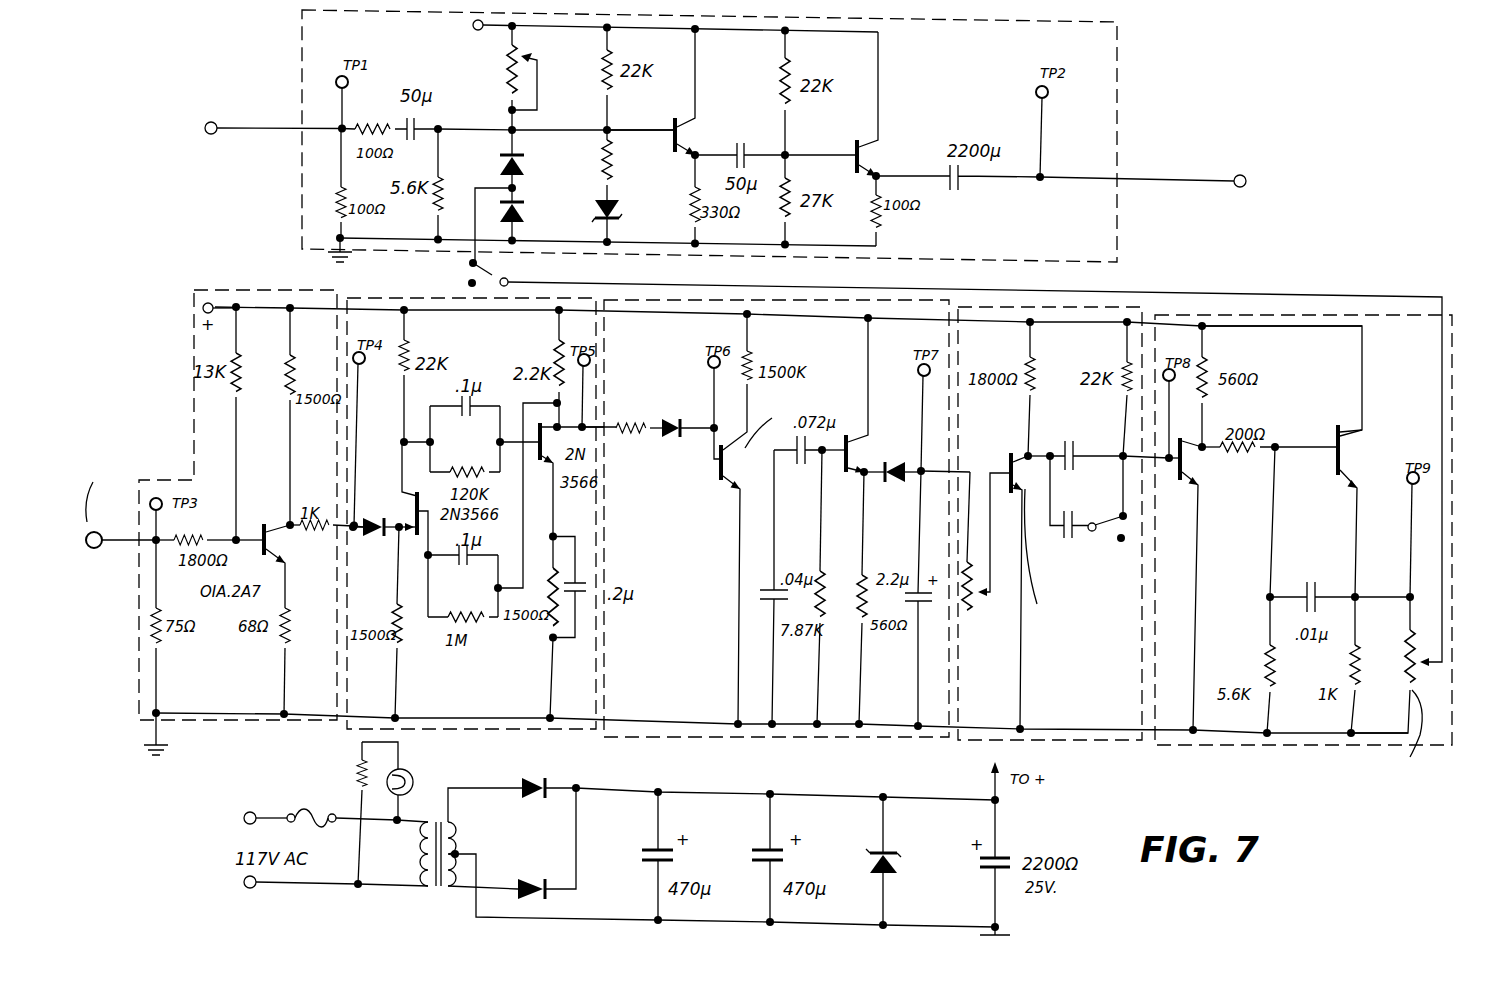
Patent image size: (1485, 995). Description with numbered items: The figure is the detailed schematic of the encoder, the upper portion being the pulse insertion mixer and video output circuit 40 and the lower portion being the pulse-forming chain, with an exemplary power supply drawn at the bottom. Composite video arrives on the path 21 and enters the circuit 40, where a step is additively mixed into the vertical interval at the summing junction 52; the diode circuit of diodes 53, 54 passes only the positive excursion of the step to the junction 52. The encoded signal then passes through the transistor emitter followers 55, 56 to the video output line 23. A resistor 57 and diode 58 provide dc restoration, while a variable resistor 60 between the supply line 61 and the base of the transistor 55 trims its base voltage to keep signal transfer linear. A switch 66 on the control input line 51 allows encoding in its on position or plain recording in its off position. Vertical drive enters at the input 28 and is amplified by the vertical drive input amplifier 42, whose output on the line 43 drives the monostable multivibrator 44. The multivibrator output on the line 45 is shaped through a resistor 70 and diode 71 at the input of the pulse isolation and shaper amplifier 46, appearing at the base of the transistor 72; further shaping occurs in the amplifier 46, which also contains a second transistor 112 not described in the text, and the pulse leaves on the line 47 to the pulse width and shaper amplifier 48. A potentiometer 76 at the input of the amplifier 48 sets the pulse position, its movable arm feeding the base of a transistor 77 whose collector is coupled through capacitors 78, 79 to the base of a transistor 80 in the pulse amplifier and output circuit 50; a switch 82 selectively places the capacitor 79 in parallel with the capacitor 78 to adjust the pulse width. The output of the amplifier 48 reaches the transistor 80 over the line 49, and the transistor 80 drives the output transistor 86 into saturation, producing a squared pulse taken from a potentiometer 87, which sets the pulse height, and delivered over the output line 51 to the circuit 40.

The composite video signal path 21 is at (224, 128).
The video output path 23 is at (1135, 178).
The vertical drive input path 28 is at (118, 538).
The pulse insertion mixer and video output circuit 40 is at (300, 30).
The vertical drive input amplifier 42 is at (136, 690).
The line 43 is at (354, 532).
The monostable multivibrator 44 is at (344, 730).
The line 45 is at (602, 425).
The pulse isolation and shaper amplifier 46 is at (645, 738).
The line 47 is at (953, 468).
The pulse width and shaper amplifier 48 is at (963, 740).
The line 49 is at (1150, 458).
The pulse amplifier and output circuit 50 is at (1193, 745).
The output line 51 is at (607, 283).
The summing junction 52 is at (515, 130).
The diode 53 is at (522, 166).
The diode 54 is at (523, 212).
The transistor emitter follower 55 is at (676, 120).
The transistor emitter follower 56 is at (857, 143).
The resistor 57 is at (612, 158).
The diode 58 is at (620, 207).
The variable resistor 60 is at (505, 62).
The supply line 61 is at (470, 31).
The switch 66 is at (496, 266).
The resistor 70 is at (635, 434).
The diode 71 is at (668, 444).
The transistor 72 is at (730, 495).
The potentiometer 76 is at (962, 616).
The transistor 77 is at (1012, 452).
The capacitor 78 is at (1062, 446).
The capacitor 79 is at (1079, 516).
The transistor 80 is at (1167, 486).
The switch 82 is at (1124, 528).
The output transistor 86 is at (1340, 428).
The potentiometer 87 is at (1413, 648).
The transistor 112 is at (870, 450).